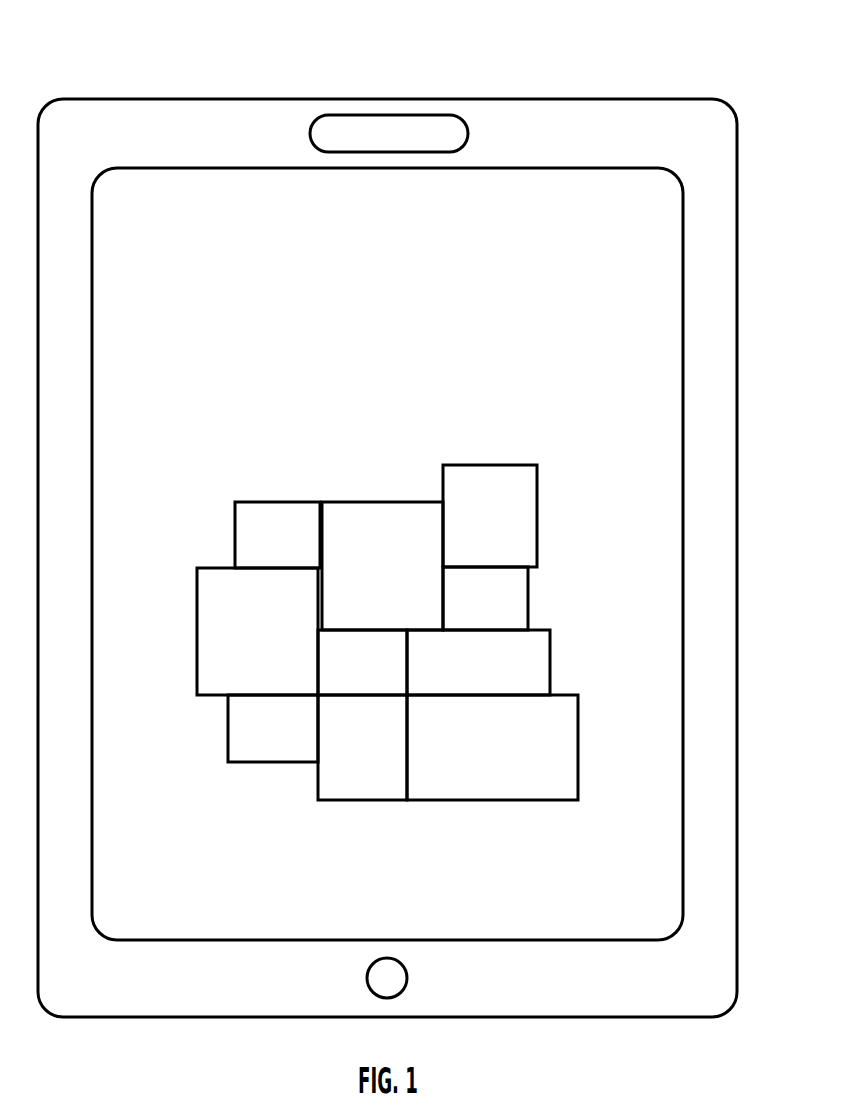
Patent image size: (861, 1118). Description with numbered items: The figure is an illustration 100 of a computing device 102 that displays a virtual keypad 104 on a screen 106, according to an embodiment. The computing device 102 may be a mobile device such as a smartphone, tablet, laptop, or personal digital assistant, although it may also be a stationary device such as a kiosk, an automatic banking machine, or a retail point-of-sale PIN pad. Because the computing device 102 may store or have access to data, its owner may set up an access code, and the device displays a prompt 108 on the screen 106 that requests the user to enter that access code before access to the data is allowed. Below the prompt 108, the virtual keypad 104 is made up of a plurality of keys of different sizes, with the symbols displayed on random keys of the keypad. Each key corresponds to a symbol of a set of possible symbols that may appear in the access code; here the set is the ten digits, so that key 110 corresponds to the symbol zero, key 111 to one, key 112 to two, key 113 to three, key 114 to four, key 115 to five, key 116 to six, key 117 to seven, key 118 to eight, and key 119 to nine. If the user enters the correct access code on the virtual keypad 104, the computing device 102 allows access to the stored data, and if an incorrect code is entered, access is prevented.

The illustration 100 is at (95, 51).
The computing device 102 is at (402, 101).
The virtual keypad 104 is at (227, 499).
The screen 106 is at (468, 543).
The prompt 108 is at (421, 304).
The key 110 is at (478, 542).
The key 111 is at (266, 561).
The key 112 is at (371, 592).
The key 113 is at (351, 689).
The key 114 is at (262, 755).
The key 115 is at (481, 773).
The key 116 is at (467, 689).
The key 117 is at (474, 624).
The key 118 is at (351, 773).
The key 119 is at (246, 657).